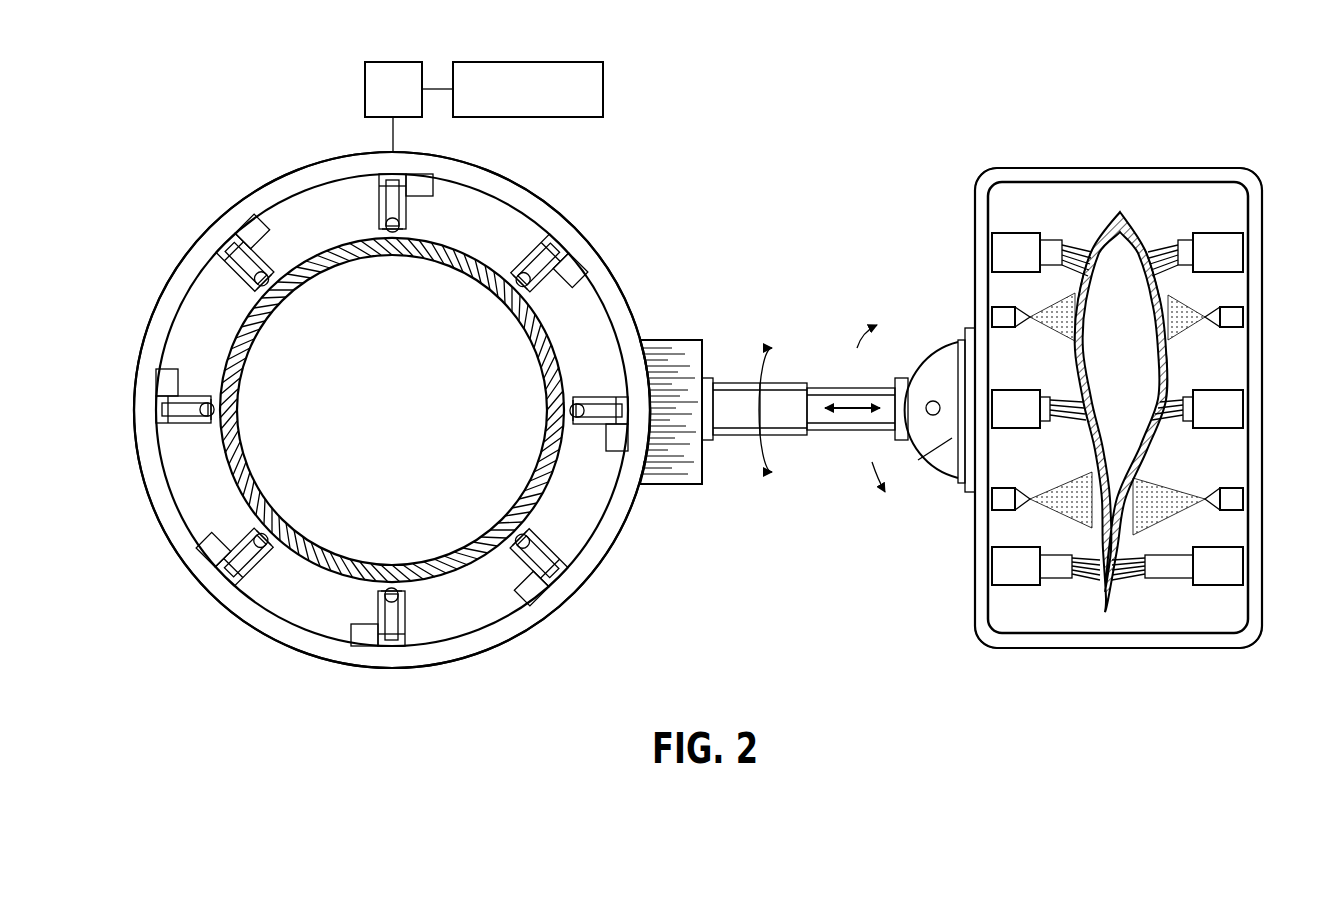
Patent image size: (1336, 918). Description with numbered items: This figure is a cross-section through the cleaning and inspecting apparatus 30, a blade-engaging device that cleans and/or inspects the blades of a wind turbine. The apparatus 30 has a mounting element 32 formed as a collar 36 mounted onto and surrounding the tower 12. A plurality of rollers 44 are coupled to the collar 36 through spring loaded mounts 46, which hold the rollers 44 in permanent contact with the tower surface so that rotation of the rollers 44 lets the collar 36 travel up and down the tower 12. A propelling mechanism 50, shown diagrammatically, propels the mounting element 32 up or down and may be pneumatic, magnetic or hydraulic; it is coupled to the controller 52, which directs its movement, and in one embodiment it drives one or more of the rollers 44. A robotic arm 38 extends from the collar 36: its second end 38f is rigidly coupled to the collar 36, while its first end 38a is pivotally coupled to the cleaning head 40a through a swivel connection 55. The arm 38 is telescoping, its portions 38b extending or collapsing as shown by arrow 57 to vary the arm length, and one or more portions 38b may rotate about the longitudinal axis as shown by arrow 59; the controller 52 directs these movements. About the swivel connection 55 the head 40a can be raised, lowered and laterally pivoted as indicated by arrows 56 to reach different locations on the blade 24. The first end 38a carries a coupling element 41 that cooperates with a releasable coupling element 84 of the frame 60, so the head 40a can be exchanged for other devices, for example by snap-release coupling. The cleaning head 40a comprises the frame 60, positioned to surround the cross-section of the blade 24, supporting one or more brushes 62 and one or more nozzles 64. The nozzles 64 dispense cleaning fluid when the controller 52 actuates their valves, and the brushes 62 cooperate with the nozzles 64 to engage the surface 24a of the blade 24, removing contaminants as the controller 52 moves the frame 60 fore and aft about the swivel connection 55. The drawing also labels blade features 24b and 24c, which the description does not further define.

The cleaning and inspecting apparatus 30 is at (110, 95).
The mounting element 32 is at (190, 252).
The collar 36 is at (150, 492).
The tower 12 is at (240, 325).
The rollers 44 is at (393, 232).
The spring loaded mounts 46 is at (426, 196).
The propelling mechanism 50 is at (378, 62).
The controller 52 is at (478, 62).
The robotic arm 38 is at (812, 272).
The second end 38f is at (708, 378).
The telescoping portions 38b is at (745, 436).
The first end 38a is at (903, 378).
The arrow 59 is at (775, 385).
The arrow 57 is at (852, 404).
The arrows 56 is at (857, 410).
The swivel connection 55 is at (942, 475).
The coupling element 41 is at (923, 443).
The releasable coupling element 84 is at (972, 352).
The frame 60 is at (1012, 168).
The cleaning head 40a is at (1125, 90).
The blade 24 is at (1184, 372).
The surface 24a is at (1172, 352).
The airfoil pressure side 24b is at (1103, 224).
The airfoil suction side 24c is at (1138, 224).
The brushes 62 is at (1020, 233).
The nozzles 64 is at (1000, 306).